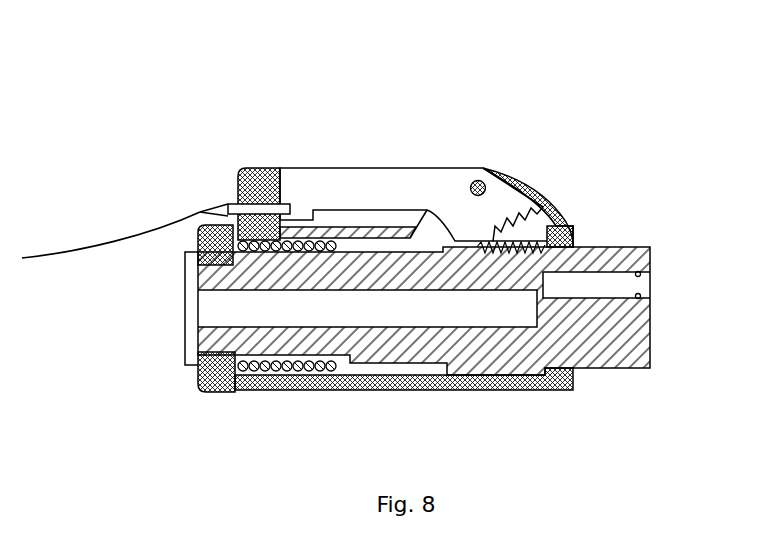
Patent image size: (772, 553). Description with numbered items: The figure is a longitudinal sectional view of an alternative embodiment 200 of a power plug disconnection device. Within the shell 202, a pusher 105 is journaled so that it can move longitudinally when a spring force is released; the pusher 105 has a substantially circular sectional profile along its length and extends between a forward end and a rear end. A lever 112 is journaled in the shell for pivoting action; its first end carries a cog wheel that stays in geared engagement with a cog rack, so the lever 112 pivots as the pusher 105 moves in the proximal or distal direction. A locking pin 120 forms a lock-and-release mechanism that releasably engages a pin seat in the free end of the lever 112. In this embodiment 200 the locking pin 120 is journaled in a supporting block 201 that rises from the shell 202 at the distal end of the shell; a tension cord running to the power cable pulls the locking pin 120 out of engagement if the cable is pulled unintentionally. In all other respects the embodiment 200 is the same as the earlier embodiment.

The disconnection device embodiment 200 is at (515, 122).
The pusher 105 is at (656, 243).
The lever 112 is at (380, 168).
The supporting block 201 is at (250, 166).
The shell 202 is at (549, 191).
The locking pin 120 is at (236, 200).